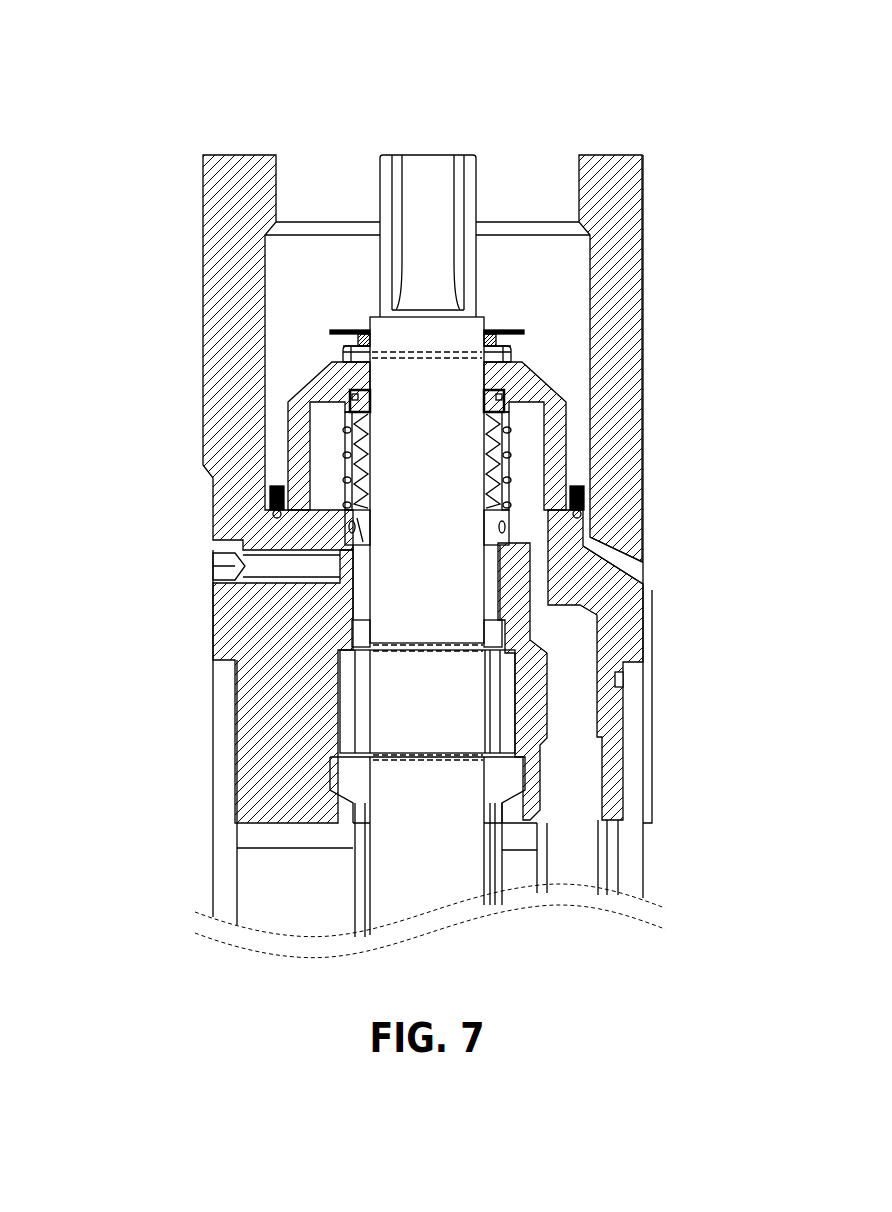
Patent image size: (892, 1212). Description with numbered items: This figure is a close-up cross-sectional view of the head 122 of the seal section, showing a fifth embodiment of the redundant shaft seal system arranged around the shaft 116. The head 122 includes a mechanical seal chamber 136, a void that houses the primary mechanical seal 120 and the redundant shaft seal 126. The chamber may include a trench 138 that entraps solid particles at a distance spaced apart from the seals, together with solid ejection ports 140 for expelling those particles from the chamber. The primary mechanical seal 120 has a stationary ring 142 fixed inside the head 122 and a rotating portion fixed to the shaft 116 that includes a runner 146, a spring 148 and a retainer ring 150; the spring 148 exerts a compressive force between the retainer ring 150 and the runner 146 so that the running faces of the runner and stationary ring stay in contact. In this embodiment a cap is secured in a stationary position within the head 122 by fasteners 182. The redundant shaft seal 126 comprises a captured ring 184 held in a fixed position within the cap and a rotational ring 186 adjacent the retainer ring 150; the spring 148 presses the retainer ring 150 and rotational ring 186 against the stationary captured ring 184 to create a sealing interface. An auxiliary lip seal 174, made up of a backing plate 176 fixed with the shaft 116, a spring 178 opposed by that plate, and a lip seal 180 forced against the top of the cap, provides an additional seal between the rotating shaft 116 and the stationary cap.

The shaft 116 is at (430, 190).
The primary mechanical seal 120 is at (527, 463).
The head 122 is at (672, 181).
The redundant shaft seal 126 is at (557, 385).
The mechanical seal chamber 136 is at (527, 258).
The trench 138 is at (590, 525).
The solid ejection ports 140 is at (612, 560).
The stationary ring 142 is at (363, 542).
The runner 146 is at (356, 500).
The spring 148 is at (350, 455).
The retainer ring 150 is at (350, 420).
The auxiliary lip seal 174 is at (542, 313).
The backing plate 176 is at (350, 346).
The spring 178 is at (492, 335).
The lip seal 180 is at (506, 347).
The fasteners 182 is at (270, 502).
The captured ring 184 is at (340, 330).
The rotational ring 186 is at (340, 392).